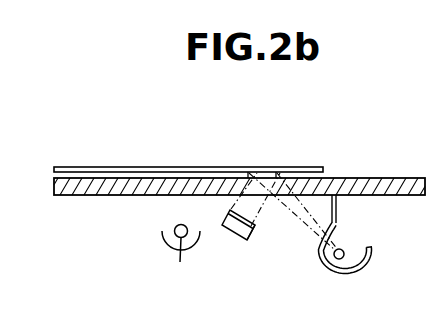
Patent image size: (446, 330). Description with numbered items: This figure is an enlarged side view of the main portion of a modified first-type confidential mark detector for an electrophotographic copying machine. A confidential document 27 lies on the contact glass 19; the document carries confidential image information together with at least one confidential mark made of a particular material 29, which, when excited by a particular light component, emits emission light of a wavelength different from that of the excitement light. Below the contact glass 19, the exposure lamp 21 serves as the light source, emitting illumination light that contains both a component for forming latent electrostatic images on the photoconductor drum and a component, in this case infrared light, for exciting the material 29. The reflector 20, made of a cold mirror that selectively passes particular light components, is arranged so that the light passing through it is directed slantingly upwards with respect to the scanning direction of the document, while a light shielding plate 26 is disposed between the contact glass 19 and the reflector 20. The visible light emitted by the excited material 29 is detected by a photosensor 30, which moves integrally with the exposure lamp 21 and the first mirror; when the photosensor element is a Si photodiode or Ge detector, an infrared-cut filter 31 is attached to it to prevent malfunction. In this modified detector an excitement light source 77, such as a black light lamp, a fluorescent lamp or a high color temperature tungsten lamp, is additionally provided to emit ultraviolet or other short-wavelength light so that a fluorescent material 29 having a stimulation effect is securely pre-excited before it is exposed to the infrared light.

The contact glass 19 is at (401, 177).
The confidential document 27 is at (94, 166).
The particular material 29 is at (262, 175).
The light shielding plate 26 is at (337, 209).
The reflector 20 is at (352, 273).
The exposure lamp 21 is at (344, 250).
The photosensor 30 is at (228, 232).
The infrared-cut filter 31 is at (254, 227).
The excitement light source 77 is at (181, 259).